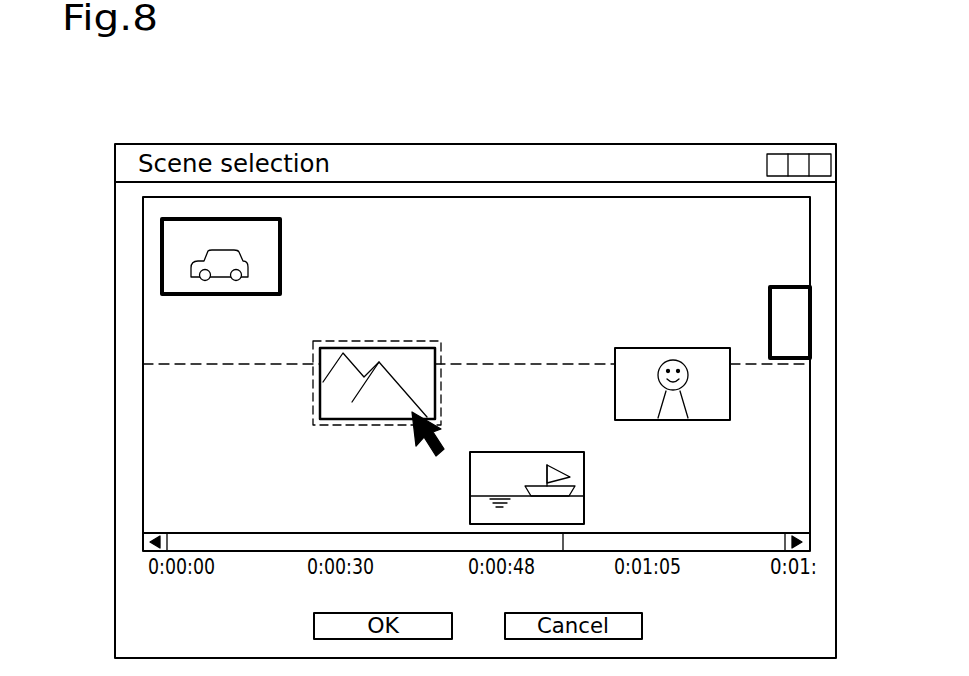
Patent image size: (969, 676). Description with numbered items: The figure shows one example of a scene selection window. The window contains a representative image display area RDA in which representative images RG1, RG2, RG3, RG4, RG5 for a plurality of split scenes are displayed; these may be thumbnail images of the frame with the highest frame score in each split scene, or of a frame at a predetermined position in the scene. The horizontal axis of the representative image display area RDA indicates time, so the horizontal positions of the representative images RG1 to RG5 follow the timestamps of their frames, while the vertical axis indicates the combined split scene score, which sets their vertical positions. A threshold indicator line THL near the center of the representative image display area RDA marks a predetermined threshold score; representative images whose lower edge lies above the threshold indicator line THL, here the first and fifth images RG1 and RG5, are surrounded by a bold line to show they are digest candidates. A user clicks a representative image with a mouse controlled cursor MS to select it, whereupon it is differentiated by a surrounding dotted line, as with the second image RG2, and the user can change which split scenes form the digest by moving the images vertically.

The representative image display area RDA is at (685, 197).
The representative image RG1 is at (282, 248).
The representative image RG2 is at (407, 348).
The representative image RG3 is at (527, 452).
The representative image RG4 is at (665, 348).
The representative image RG5 is at (768, 298).
The threshold indicator line THL is at (291, 363).
The mouse controlled cursor MS is at (429, 452).